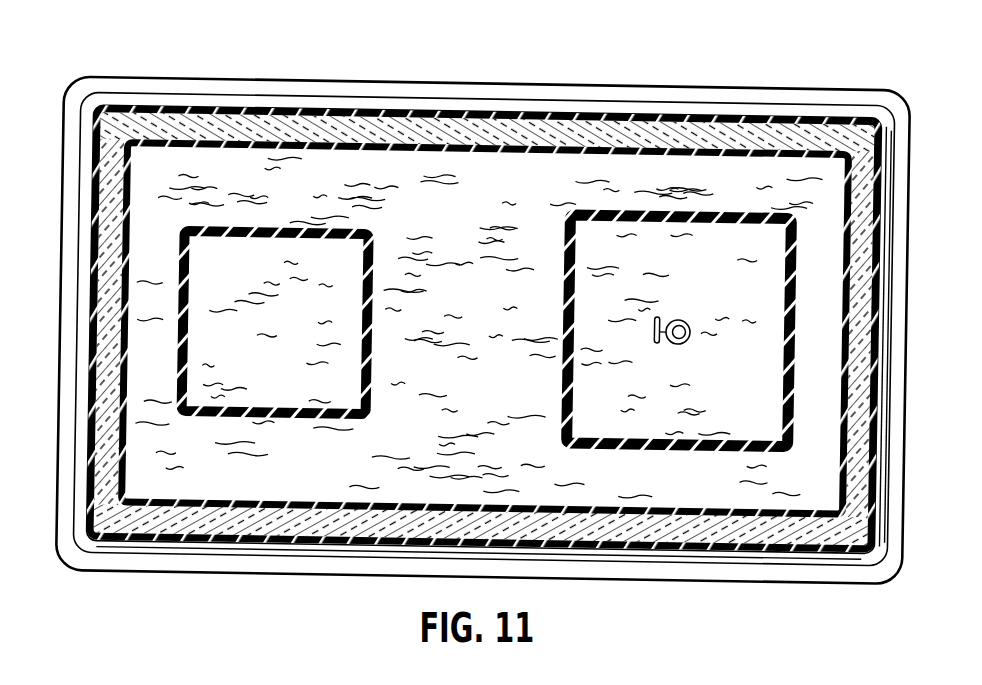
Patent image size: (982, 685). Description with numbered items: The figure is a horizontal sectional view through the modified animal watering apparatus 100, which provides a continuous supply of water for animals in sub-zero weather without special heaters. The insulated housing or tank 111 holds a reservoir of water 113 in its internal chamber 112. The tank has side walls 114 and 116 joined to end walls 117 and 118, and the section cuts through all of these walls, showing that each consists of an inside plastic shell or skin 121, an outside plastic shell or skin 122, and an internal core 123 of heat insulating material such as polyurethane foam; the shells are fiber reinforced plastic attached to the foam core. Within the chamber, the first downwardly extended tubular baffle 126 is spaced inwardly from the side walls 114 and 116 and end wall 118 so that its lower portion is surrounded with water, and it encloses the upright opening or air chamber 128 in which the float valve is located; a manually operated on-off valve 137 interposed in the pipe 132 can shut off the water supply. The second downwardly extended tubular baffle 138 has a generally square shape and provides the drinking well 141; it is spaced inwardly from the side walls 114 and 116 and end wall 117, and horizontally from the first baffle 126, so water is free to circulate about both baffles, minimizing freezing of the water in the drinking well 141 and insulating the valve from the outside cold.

The animal watering apparatus 100 is at (122, 63).
The insulated housing or tank 111 is at (731, 111).
The internal chamber 112 is at (470, 325).
The water 113 is at (530, 186).
The side wall 114 is at (382, 115).
The side wall 116 is at (629, 546).
The end wall 117 is at (92, 300).
The end wall 118 is at (874, 294).
The inside plastic shell or skin 121 is at (841, 204).
The outside plastic shell or skin 122 is at (876, 182).
The internal core of heat insulated material 123 is at (858, 226).
The first downwardly extended tubular baffle 126 is at (570, 296).
The upright opening or chamber 128 is at (668, 334).
The pipe 132 is at (688, 340).
The manually operated on-off valve 137 is at (655, 338).
The second downwardly extended tubular baffle 138 is at (325, 231).
The drinking well 141 is at (272, 331).